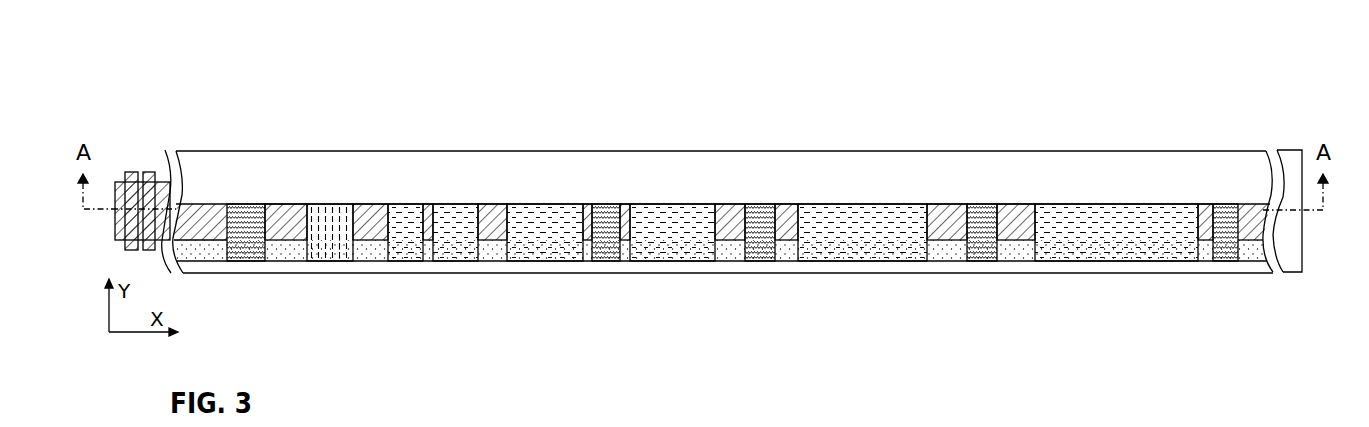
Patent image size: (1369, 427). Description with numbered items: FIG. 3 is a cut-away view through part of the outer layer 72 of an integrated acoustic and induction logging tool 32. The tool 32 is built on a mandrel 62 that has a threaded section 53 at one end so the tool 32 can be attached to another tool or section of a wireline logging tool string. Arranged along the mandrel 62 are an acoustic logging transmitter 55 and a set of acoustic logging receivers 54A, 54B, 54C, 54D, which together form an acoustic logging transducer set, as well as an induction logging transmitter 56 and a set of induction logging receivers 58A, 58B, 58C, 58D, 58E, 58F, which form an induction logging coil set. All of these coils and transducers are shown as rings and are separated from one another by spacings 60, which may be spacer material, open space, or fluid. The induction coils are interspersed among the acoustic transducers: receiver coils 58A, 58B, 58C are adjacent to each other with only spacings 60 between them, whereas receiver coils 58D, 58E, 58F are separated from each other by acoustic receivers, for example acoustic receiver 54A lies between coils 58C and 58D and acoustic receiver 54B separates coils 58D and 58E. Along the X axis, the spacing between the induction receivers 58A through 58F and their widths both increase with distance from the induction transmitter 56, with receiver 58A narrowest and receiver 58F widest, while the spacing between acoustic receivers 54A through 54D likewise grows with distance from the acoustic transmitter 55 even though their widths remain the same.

The integrated acoustic and induction logging tool 32 is at (1303, 83).
The threaded section 53 is at (163, 135).
The outer layer 72 is at (200, 150).
The mandrel 62 is at (207, 254).
The acoustic logging transmitter 55 is at (243, 254).
The induction logging transmitter 56 is at (330, 256).
The induction logging receiver 58A is at (407, 256).
The induction logging receiver 58B is at (458, 256).
The induction logging receiver 58C is at (537, 256).
The induction logging receiver 58D is at (672, 256).
The induction logging receiver 58E is at (863, 256).
The induction logging receiver 58F is at (1115, 256).
The acoustic logging receiver 54A is at (602, 256).
The acoustic logging receiver 54B is at (760, 256).
The acoustic logging receiver 54C is at (982, 256).
The acoustic logging receiver 54D is at (1225, 256).
The spacings 60 is at (1183, 336).